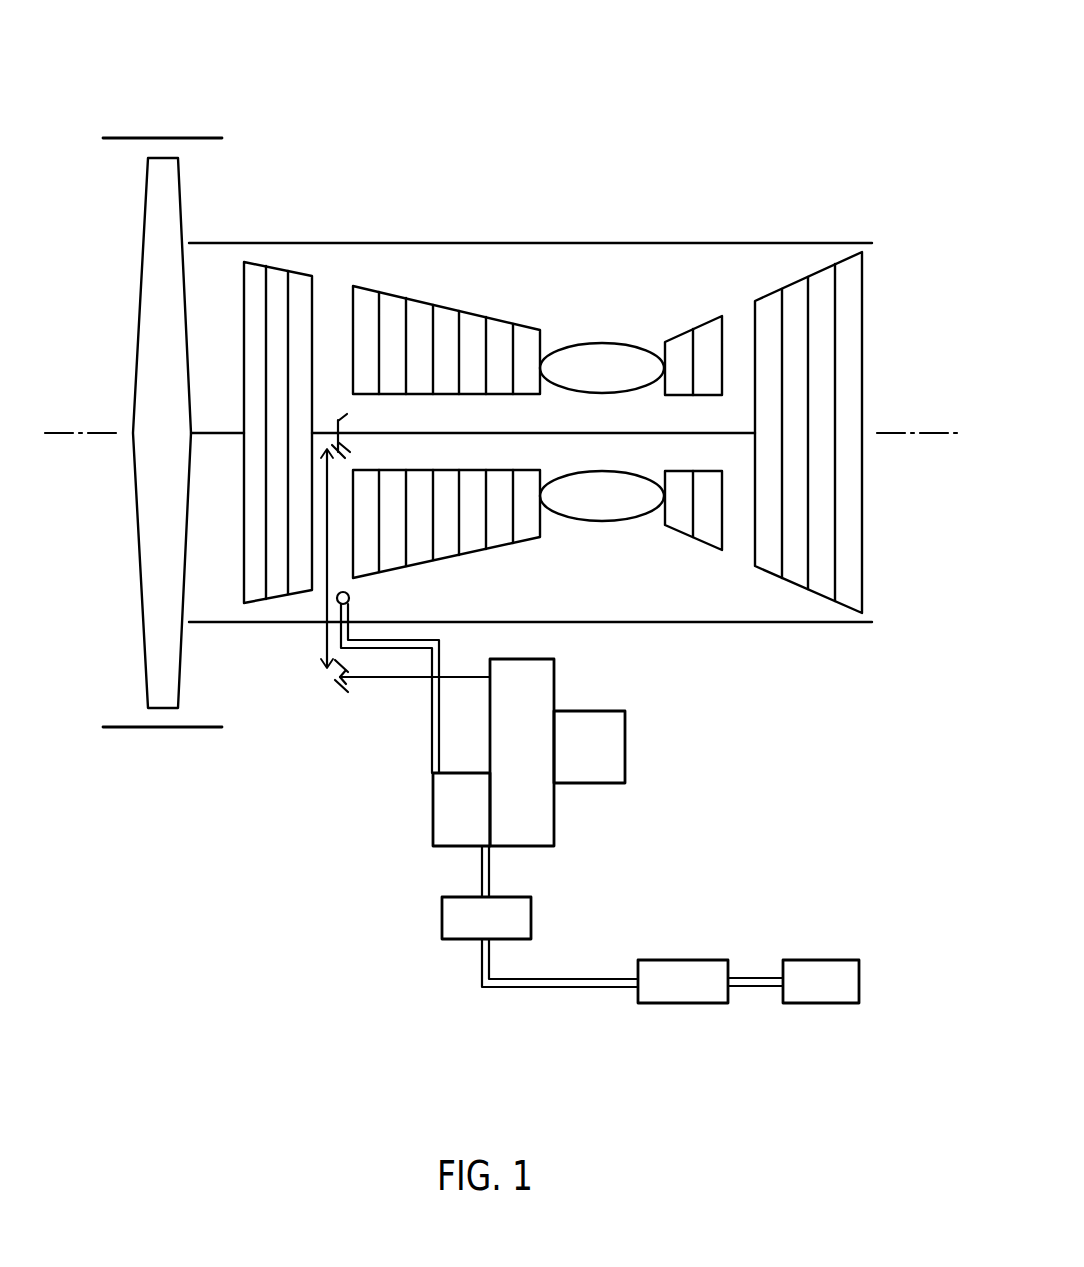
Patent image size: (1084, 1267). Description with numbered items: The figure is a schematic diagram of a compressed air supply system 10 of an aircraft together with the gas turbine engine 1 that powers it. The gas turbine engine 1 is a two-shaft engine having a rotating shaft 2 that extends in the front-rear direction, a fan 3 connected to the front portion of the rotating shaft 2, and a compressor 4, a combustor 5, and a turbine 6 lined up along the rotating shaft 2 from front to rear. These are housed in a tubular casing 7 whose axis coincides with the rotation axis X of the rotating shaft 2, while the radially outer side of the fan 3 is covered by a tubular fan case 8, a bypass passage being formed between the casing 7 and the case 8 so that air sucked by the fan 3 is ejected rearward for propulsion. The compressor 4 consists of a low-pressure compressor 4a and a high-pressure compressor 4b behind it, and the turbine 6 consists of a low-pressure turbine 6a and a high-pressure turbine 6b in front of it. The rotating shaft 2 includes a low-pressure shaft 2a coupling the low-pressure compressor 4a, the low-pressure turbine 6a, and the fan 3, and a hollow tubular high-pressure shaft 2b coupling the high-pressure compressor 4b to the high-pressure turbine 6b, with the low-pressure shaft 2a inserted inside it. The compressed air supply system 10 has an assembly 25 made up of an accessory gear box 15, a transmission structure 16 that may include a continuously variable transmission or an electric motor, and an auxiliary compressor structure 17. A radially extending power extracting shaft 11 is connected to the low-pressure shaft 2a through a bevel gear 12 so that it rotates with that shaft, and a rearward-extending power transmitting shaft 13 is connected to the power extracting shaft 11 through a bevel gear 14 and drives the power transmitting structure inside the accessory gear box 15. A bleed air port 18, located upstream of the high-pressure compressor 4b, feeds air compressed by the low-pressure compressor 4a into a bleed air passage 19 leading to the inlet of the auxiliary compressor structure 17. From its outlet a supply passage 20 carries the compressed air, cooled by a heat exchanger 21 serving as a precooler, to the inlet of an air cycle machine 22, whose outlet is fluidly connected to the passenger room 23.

The gas turbine engine 1 is at (670, 118).
The rotating shaft 2 is at (595, 160).
The low-pressure shaft 2a is at (468, 432).
The high-pressure shaft 2b is at (525, 395).
The fan 3 is at (138, 343).
The compressor 4 is at (417, 160).
The low-pressure compressor 4a is at (278, 267).
The high-pressure compressor 4b is at (418, 297).
The combustor 5 is at (600, 352).
The turbine 6 is at (820, 160).
The low-pressure turbine 6a is at (803, 280).
The high-pressure turbine 6b is at (703, 326).
The casing 7 is at (873, 622).
The fan case 8 is at (163, 137).
The compressed air supply system 10 is at (243, 895).
The power extracting shaft 11 is at (328, 612).
The bevel gear 12 is at (348, 452).
The power transmitting shaft 13 is at (385, 677).
The bevel gear 14 is at (346, 683).
The accessory gear box 15 is at (556, 672).
The transmission structure 16 is at (626, 748).
The auxiliary compressor structure 17 is at (433, 822).
The bleed air port 18 is at (350, 597).
The bleed air passage 19 is at (430, 754).
The supply passage 20 is at (538, 987).
The heat exchanger 21 is at (442, 918).
The air cycle machine 22 is at (678, 1003).
The passenger room 23 is at (818, 1003).
The assembly 25 is at (578, 814).
The rotation axis X is at (897, 433).